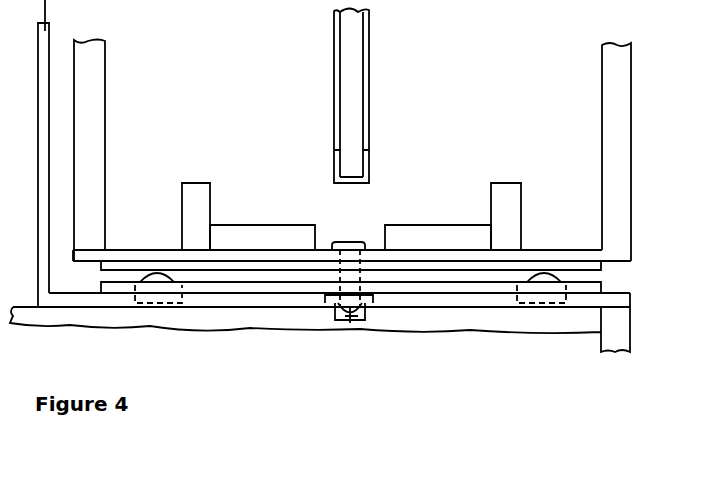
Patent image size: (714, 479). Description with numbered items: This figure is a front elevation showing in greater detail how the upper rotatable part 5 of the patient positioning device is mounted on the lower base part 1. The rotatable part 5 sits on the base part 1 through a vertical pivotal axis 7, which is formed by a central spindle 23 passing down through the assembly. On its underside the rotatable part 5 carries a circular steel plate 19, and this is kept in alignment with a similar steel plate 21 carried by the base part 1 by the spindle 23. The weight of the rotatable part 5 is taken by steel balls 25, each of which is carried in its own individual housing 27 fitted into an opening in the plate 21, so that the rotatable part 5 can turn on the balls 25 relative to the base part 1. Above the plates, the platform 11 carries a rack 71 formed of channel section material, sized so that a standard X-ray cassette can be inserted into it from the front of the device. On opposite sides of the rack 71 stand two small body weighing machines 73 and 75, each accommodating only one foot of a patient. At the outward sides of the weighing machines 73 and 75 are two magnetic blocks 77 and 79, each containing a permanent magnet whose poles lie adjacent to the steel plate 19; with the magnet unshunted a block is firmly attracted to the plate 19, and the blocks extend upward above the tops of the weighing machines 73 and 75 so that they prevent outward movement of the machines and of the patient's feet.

The base part 1 is at (616, 340).
The rotatable part 5 is at (617, 57).
The vertical pivotal axis 7 is at (350, 241).
The platform 11 is at (559, 250).
The circular steel plate 19 is at (138, 261).
The steel plate 21 is at (119, 290).
The central spindle 23 is at (350, 323).
The steel ball 25 is at (151, 274).
The housing 27 is at (180, 303).
The rack 71 is at (369, 79).
The body weighing machine 73 is at (270, 240).
The body weighing machine 75 is at (443, 240).
The magnetic block 77 is at (197, 197).
The magnetic block 79 is at (507, 194).